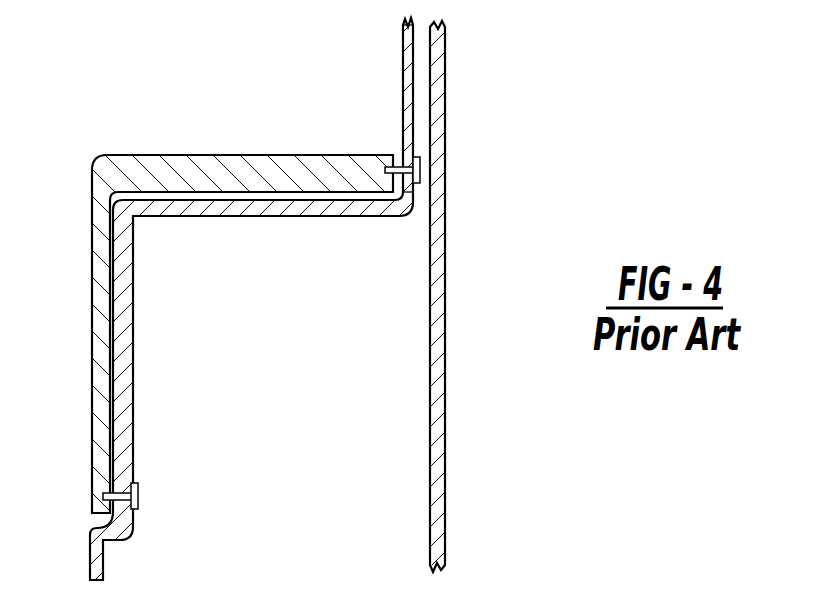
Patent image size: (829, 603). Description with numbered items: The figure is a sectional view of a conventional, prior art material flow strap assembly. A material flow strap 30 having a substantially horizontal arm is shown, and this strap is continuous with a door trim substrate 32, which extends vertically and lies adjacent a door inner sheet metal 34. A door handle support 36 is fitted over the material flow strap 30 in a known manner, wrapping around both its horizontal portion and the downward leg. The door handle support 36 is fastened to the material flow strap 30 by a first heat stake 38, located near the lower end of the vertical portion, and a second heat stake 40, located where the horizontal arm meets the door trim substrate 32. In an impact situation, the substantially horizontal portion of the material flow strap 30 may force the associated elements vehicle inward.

The material flow strap 30 is at (208, 216).
The door trim substrate 32 is at (403, 72).
The door inner sheet metal 34 is at (447, 233).
The door handle support 36 is at (128, 167).
The first heat stake 38 is at (140, 495).
The second heat stake 40 is at (419, 185).